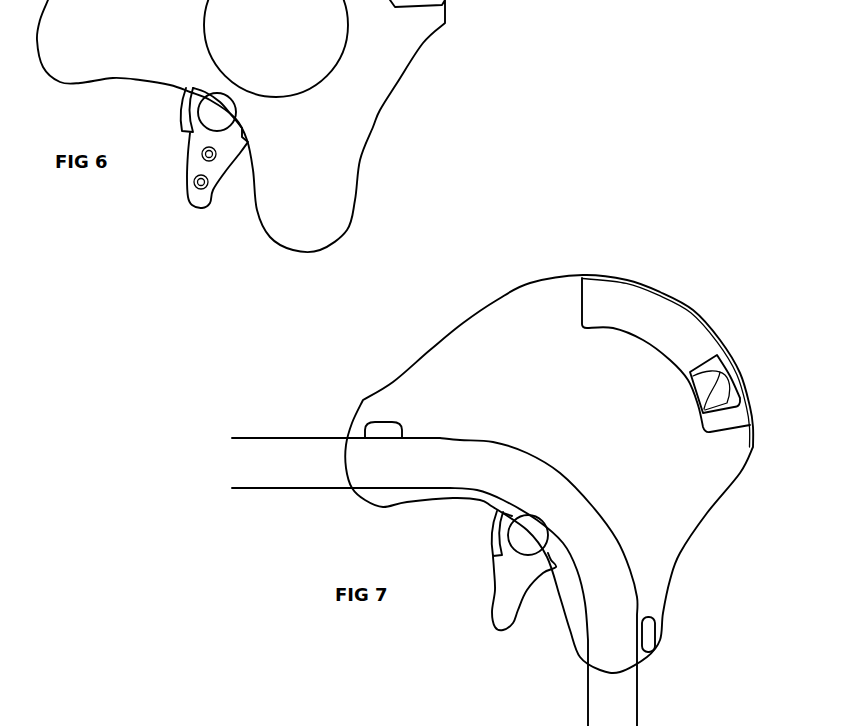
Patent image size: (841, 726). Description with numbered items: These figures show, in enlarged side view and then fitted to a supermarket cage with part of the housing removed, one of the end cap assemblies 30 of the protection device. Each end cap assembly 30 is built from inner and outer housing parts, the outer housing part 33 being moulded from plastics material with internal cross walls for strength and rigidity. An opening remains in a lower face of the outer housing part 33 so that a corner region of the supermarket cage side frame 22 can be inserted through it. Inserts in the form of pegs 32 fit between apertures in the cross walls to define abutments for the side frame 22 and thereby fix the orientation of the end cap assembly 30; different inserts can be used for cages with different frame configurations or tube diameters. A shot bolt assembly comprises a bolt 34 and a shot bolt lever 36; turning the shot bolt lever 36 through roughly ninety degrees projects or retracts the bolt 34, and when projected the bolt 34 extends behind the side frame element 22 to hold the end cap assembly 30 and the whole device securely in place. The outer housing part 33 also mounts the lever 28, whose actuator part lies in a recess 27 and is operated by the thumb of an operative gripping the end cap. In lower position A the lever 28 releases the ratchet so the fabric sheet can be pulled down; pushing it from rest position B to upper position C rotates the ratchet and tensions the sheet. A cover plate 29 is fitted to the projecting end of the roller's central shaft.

In FIG. 7, the supermarket cage side frame 22 is at (472, 438).
In FIG. 7, the recess 27 is at (613, 328).
In FIG. 7, the lever 28 is at (703, 394).
In FIG. 6, the cover plate 29 is at (330, 72).
In FIG. 7, the end cap assembly 30 is at (390, 381).
In FIG. 7, the peg 32 is at (378, 433).
In FIG. 6, the outer housing part 33 is at (363, 157).
In FIG. 6, the bolt 34 is at (205, 103).
In FIG. 7, the bolt 34 is at (508, 528).
In FIG. 6, the shot bolt lever 36 is at (185, 140).
In FIG. 7, the shot bolt lever 36 is at (493, 584).
In FIG. 7, the lower position A is at (745, 382).
In FIG. 7, the rest position B is at (720, 340).
In FIG. 7, the upper position C is at (634, 280).